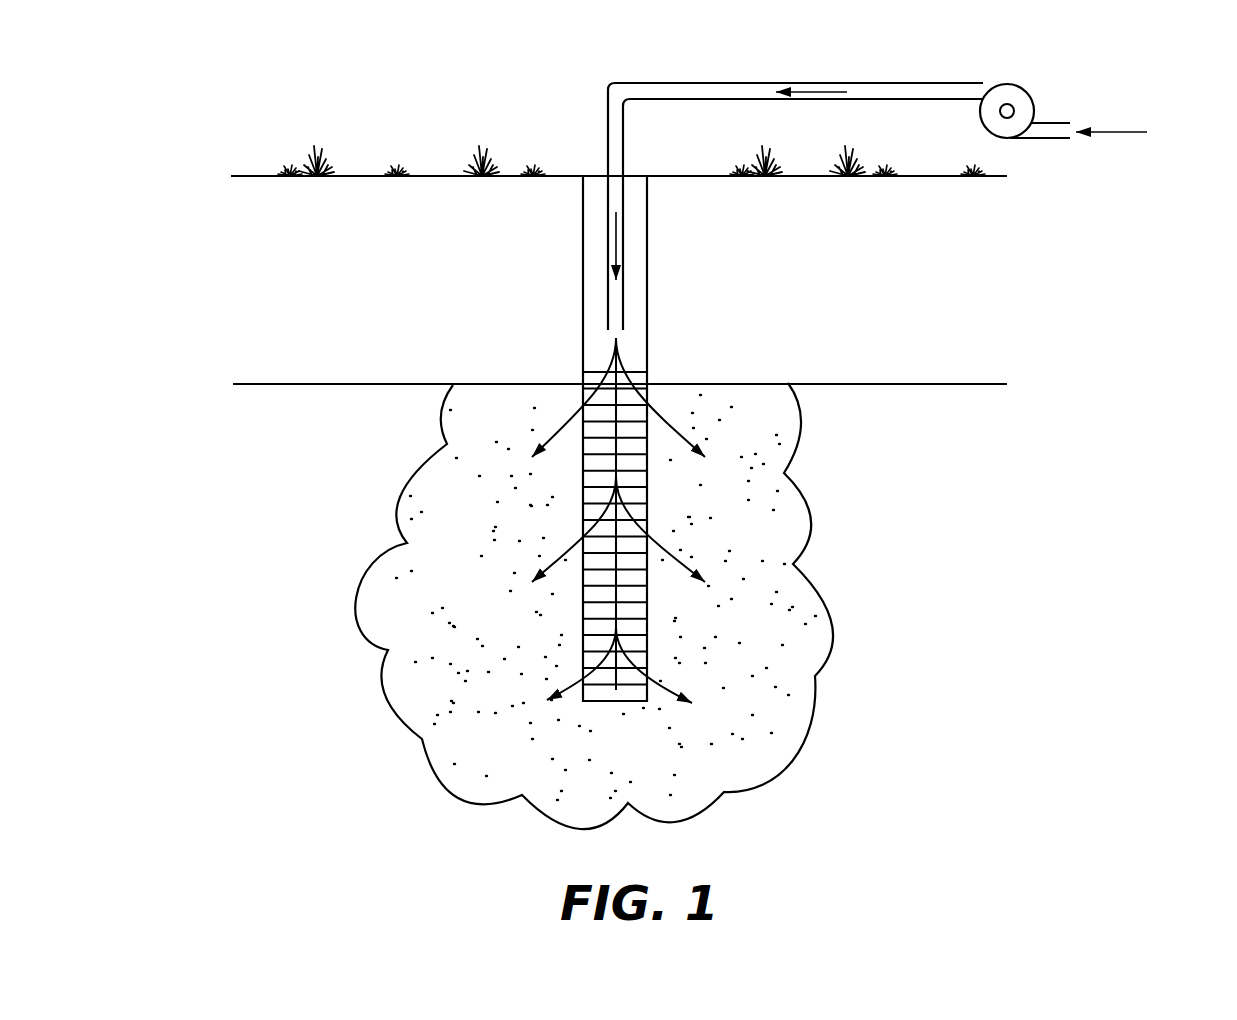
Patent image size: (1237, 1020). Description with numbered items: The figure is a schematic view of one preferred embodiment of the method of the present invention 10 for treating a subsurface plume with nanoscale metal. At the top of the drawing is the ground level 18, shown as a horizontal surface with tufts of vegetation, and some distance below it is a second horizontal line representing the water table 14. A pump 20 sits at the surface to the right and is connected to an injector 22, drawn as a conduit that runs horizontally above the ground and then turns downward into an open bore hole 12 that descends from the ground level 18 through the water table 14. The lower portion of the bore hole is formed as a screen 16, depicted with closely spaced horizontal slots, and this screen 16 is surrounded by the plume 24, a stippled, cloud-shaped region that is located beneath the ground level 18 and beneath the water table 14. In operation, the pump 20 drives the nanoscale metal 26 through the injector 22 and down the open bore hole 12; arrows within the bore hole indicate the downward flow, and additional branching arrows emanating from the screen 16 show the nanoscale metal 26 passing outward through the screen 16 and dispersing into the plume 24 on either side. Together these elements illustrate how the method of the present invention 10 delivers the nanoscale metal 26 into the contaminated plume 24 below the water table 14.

The method of the present invention 10 is at (1073, 719).
The open bore hole 12 is at (583, 280).
The water table 14 is at (257, 384).
The screen 16 is at (647, 627).
The ground level 18 is at (252, 176).
The pump 20 is at (1022, 97).
The injector 22 is at (698, 87).
The plume 24 is at (422, 717).
The nanoscale metal 26 is at (673, 438).